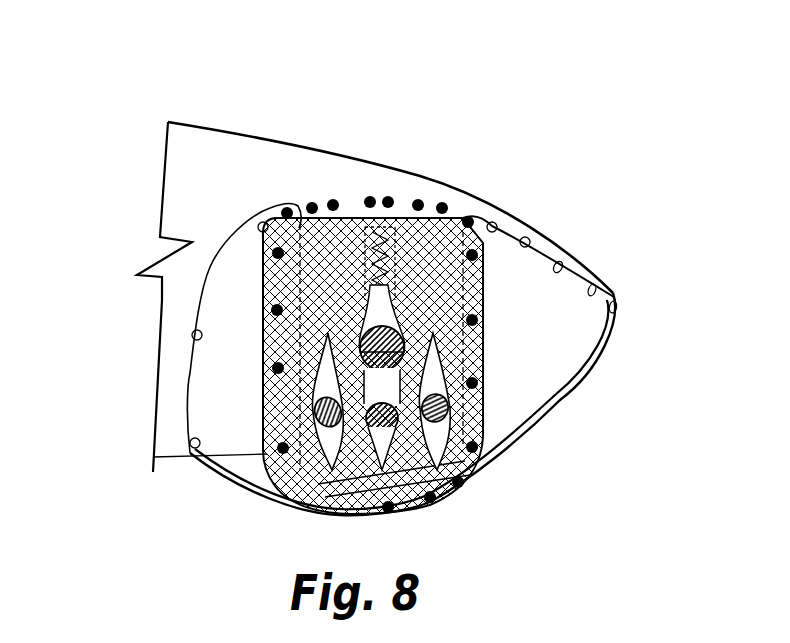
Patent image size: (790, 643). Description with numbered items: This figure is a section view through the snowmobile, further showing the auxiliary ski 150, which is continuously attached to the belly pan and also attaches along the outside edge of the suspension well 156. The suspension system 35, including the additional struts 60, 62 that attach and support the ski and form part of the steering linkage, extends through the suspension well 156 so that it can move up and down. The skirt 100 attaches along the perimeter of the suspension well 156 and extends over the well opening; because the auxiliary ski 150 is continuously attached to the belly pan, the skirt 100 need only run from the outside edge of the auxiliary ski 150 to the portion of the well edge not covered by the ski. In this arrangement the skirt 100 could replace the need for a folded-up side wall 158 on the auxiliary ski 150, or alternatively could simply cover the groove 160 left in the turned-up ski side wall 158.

The skirt 100 is at (488, 281).
The suspension system 35 is at (403, 292).
The suspension well 156 is at (337, 179).
The folded-up side wall 158 is at (520, 292).
The strut 62 is at (310, 397).
The strut 60 is at (440, 400).
The auxiliary ski 150 is at (475, 490).
The groove 160 is at (310, 513).